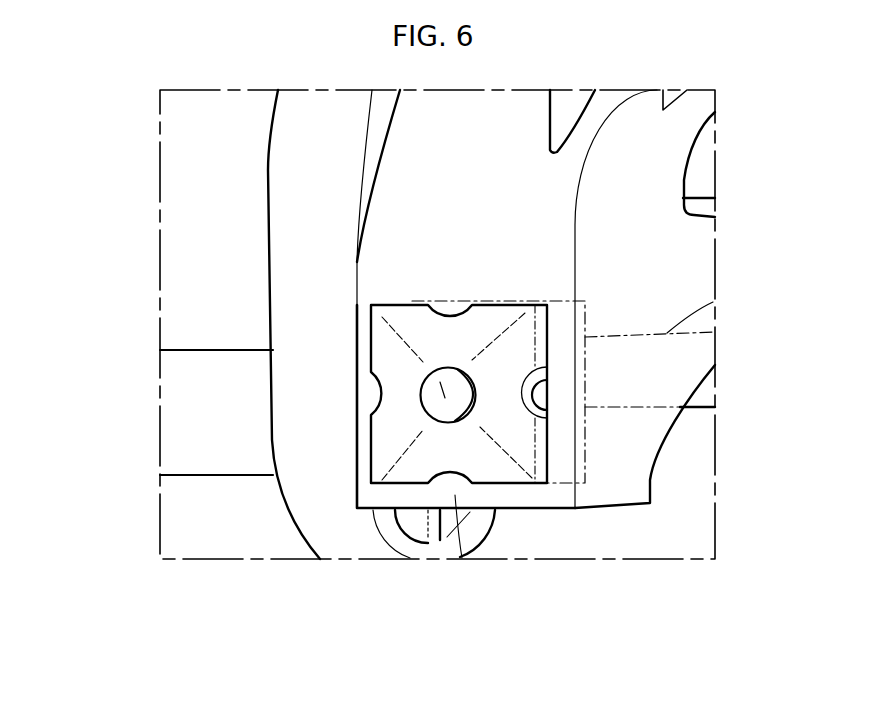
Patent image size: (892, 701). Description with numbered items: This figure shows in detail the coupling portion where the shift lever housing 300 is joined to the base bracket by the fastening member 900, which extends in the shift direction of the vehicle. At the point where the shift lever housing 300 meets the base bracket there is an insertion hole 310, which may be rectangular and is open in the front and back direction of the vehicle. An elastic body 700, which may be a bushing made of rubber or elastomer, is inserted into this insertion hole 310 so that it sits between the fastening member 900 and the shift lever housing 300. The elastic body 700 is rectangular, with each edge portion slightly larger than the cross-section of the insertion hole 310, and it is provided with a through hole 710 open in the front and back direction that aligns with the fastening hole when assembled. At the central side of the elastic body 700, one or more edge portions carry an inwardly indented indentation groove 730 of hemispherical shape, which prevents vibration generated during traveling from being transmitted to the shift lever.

The shift lever housing 300 is at (640, 175).
The fastening member 900 is at (713, 302).
The insertion hole 310 is at (535, 400).
The through hole 710 is at (443, 392).
The elastic body 700 is at (401, 470).
The indentation groove 730 is at (452, 478).